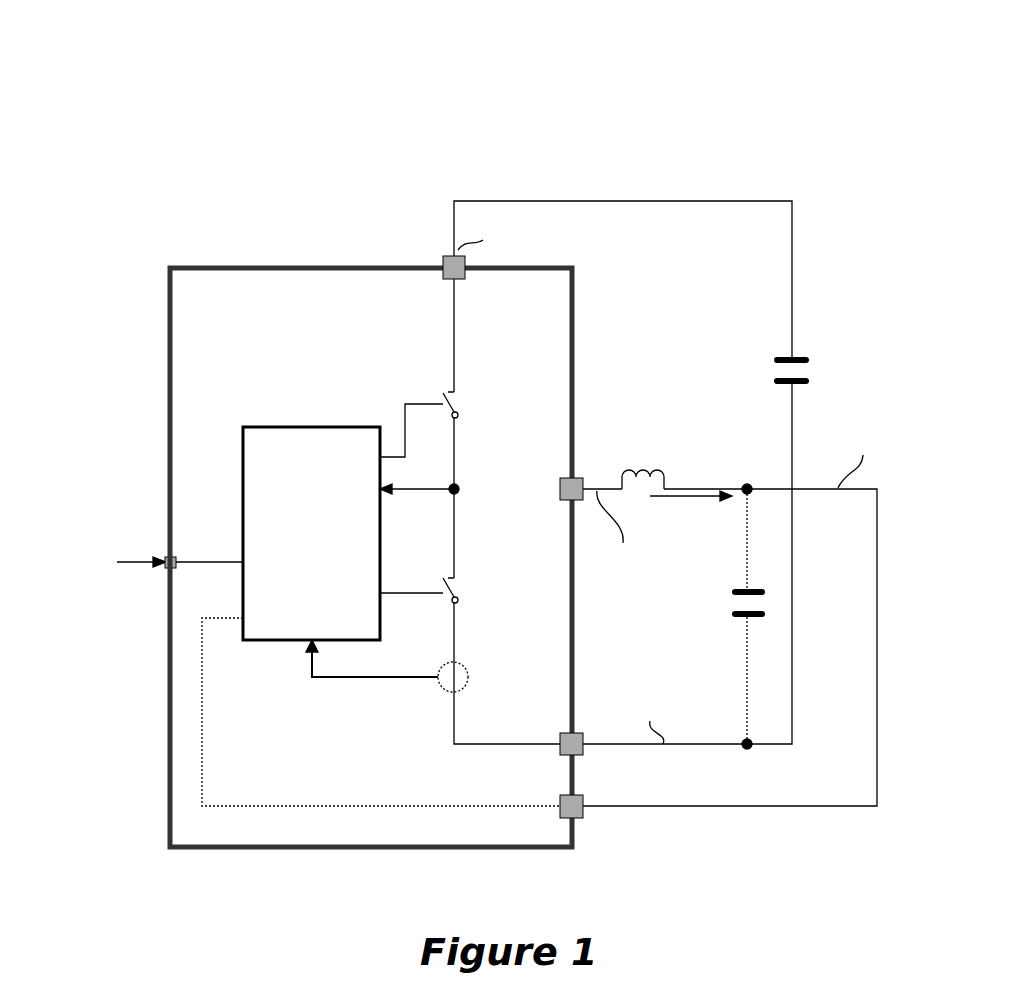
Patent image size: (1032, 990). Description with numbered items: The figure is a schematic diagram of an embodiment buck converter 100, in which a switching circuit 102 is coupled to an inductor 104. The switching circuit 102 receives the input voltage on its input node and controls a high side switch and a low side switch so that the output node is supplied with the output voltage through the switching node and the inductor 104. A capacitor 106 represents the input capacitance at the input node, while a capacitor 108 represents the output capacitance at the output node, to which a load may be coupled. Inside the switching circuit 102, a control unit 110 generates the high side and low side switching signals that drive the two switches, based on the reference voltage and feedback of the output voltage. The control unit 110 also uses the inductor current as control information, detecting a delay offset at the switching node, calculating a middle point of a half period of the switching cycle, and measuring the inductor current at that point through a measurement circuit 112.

The buck converter 100 is at (848, 92).
The switching circuit 102 is at (277, 849).
The inductor 104 is at (657, 468).
The capacitor 106 is at (804, 357).
The capacitor 108 is at (762, 592).
The control unit 110 is at (300, 427).
The measurement circuit 112 is at (440, 690).